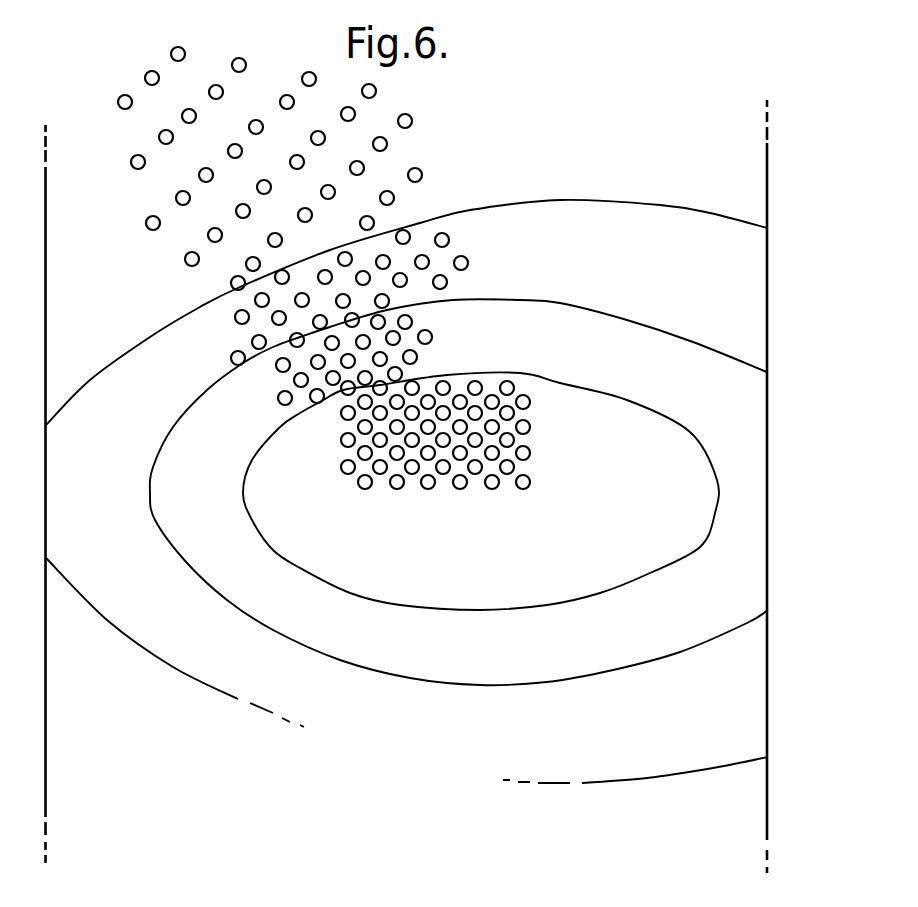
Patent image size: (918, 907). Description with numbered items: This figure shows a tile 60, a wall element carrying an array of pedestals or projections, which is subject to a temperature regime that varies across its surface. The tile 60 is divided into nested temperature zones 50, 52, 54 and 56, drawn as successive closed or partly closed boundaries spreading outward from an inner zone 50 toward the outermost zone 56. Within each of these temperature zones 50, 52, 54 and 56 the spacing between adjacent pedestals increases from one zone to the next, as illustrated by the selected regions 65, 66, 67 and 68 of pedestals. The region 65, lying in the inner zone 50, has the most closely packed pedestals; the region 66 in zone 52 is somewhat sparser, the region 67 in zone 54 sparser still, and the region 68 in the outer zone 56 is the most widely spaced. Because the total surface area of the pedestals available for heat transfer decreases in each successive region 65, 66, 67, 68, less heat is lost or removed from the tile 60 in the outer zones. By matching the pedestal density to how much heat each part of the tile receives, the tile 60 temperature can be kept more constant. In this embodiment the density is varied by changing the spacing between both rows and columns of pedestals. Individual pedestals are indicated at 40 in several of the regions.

The nanoparticle 40 is at (252, 340).
The temperature zone 50 is at (584, 467).
The temperature zone 52 is at (578, 366).
The temperature zone 54 is at (579, 276).
The temperature zone 56 is at (579, 168).
The tile 60 is at (730, 183).
The selected region 65 is at (442, 514).
The selected region 66 is at (457, 339).
The selected region 67 is at (477, 244).
The selected region 68 is at (430, 134).